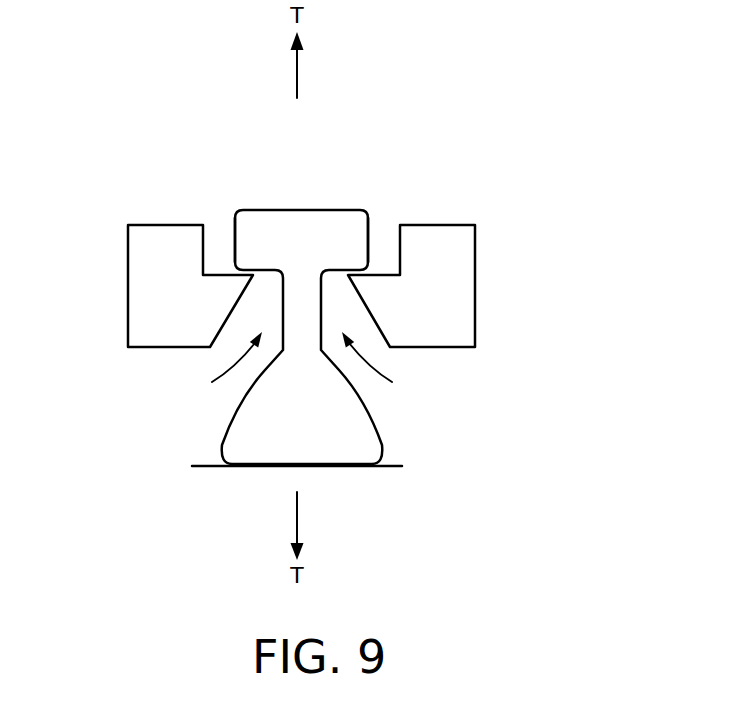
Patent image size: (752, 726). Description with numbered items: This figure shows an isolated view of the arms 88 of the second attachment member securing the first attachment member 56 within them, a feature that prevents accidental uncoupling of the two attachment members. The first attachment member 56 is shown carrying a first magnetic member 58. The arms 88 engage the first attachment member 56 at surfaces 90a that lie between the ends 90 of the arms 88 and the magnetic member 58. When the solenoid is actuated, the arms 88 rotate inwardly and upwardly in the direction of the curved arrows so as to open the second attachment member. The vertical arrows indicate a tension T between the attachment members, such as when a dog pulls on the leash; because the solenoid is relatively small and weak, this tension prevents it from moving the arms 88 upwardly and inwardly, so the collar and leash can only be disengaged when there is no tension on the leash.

The first attachment member 56 is at (405, 444).
The first magnetic member 58 is at (297, 228).
The arms 88 is at (128, 306).
The ends of the arms 90 is at (237, 313).
The surfaces 90a is at (248, 270).